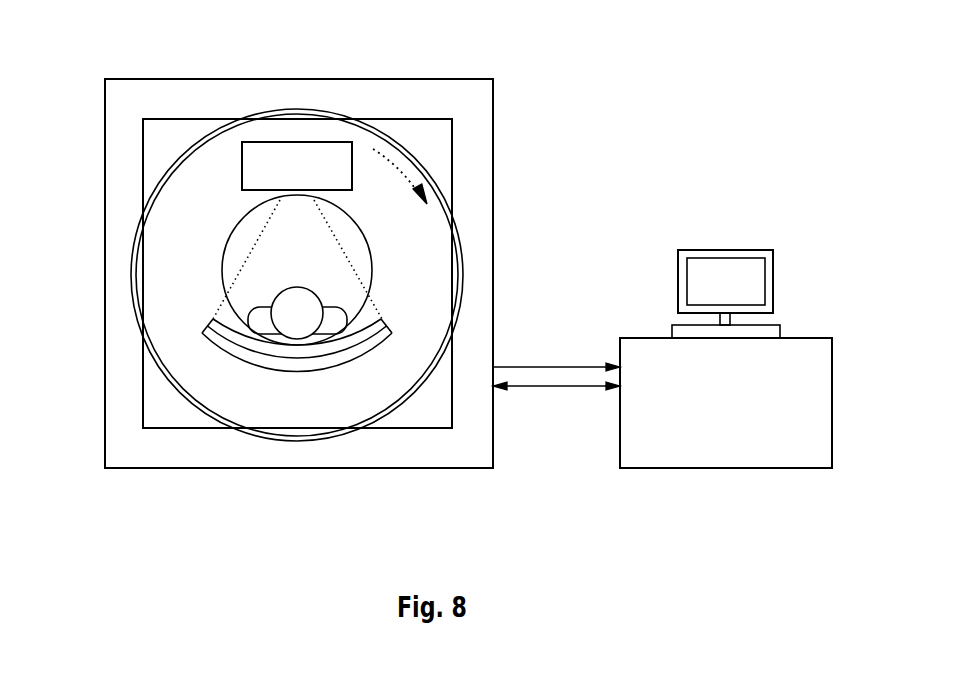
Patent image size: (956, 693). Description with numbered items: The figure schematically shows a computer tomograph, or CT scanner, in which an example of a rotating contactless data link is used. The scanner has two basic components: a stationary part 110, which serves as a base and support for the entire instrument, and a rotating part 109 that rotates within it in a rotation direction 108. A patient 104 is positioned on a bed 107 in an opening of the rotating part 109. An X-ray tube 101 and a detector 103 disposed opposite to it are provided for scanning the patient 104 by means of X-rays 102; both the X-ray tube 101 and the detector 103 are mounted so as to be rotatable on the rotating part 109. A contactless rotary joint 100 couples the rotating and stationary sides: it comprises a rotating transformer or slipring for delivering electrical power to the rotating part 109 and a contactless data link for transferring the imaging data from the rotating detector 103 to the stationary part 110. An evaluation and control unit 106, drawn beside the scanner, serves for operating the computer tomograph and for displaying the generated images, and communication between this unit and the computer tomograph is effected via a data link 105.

The contactless rotary joint 100 is at (460, 267).
The X-ray tube 101 is at (298, 167).
The X-rays 102 is at (250, 252).
The detector 103 is at (213, 325).
The patient 104 is at (335, 320).
The data link 105 is at (557, 390).
The evaluation and control unit 106 is at (728, 440).
The bed 107 is at (312, 340).
The rotation direction 108 is at (405, 173).
The rotating part 109 is at (433, 237).
The stationary part 110 is at (467, 186).